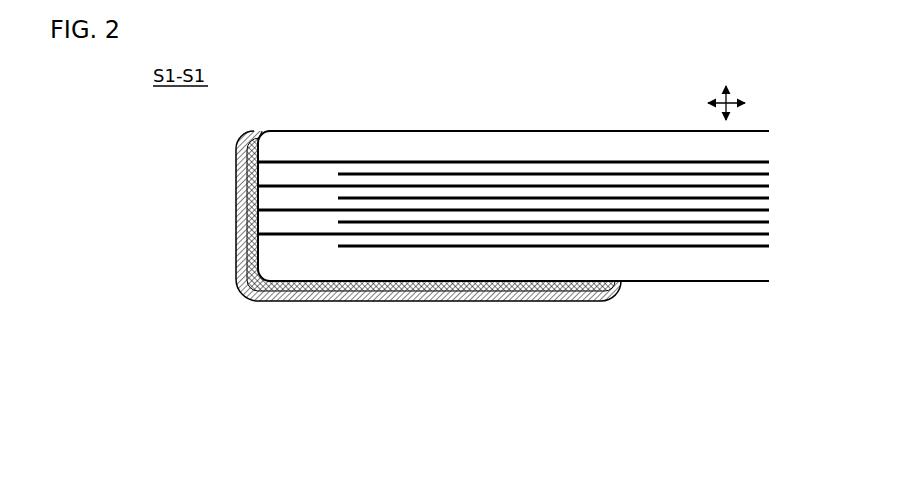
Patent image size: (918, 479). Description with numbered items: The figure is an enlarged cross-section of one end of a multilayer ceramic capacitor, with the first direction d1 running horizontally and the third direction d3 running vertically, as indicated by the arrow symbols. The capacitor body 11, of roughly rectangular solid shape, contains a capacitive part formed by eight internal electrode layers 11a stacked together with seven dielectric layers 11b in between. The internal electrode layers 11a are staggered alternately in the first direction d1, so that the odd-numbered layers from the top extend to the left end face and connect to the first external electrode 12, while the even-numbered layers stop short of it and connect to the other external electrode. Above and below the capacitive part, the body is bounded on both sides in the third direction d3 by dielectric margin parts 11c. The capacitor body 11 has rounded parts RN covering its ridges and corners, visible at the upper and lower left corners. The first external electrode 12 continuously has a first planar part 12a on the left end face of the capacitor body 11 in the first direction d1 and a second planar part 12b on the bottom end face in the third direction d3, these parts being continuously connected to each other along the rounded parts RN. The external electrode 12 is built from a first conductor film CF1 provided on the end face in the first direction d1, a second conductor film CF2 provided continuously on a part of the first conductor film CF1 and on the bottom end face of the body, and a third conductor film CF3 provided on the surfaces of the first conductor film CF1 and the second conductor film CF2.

The capacitor body 11 is at (513, 218).
The internal electrode layers 11a is at (545, 158).
The dielectric layers 11b is at (590, 167).
The dielectric margin parts 11c is at (658, 145).
The first external electrode 12 is at (394, 245).
The first planar part 12a is at (240, 200).
The second planar part 12b is at (488, 302).
The first conductor film CF1 is at (250, 174).
The second conductor film CF2 is at (368, 288).
The third conductor film CF3 is at (428, 294).
The rounded parts RN is at (280, 131).
The first direction d1 is at (737, 105).
The third direction d3 is at (727, 92).